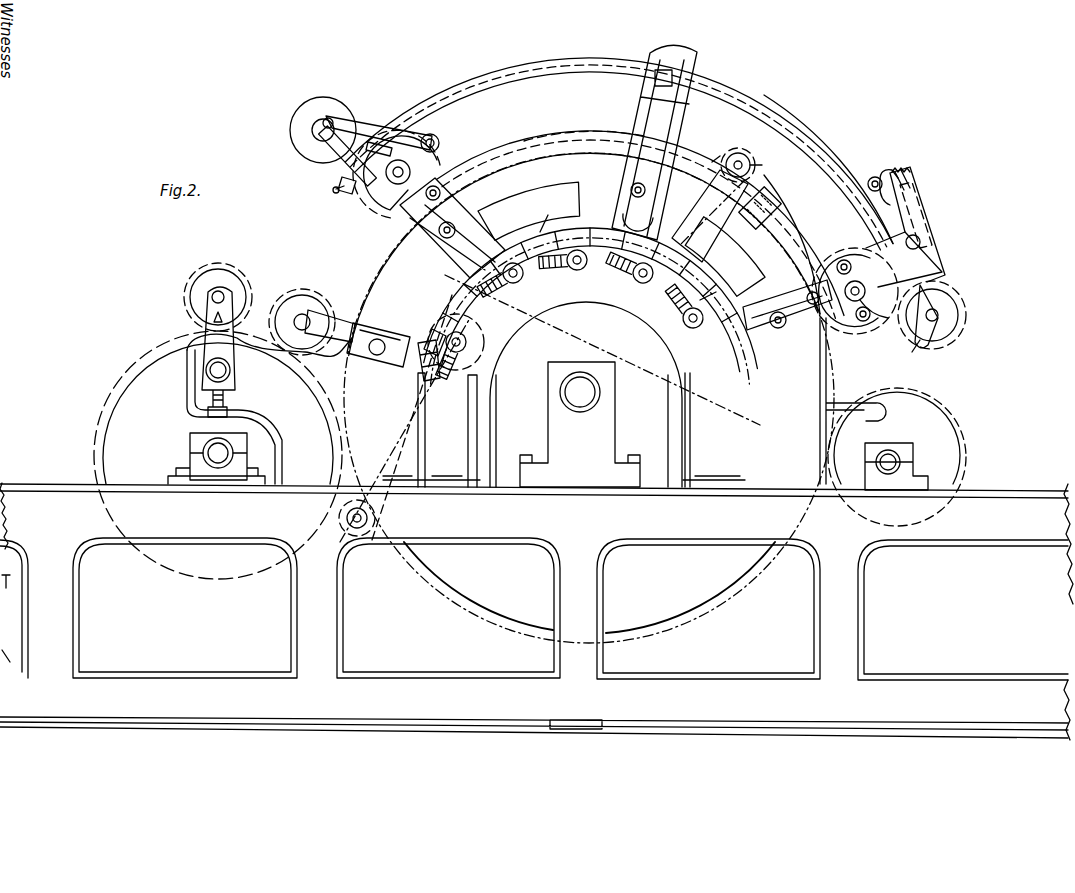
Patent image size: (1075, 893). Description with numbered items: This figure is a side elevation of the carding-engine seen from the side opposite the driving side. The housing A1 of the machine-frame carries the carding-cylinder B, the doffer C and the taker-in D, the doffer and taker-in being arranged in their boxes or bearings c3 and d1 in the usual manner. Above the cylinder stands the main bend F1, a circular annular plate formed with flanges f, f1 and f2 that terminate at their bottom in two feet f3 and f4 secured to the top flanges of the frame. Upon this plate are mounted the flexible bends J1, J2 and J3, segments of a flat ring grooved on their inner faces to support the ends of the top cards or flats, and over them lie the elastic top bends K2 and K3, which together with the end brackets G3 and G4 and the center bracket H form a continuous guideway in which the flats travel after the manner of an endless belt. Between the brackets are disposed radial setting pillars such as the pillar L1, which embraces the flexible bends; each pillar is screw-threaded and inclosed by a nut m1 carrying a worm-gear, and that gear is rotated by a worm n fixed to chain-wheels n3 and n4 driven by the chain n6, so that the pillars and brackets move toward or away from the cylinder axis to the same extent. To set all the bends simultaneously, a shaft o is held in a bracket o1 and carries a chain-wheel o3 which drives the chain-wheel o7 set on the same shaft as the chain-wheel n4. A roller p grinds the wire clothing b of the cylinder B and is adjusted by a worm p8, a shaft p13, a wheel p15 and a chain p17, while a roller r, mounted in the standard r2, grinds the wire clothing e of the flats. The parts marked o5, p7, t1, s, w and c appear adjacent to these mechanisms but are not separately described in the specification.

The housing of the machine-frame A1 is at (536, 611).
The carding-cylinder B is at (615, 398).
The doffer C is at (218, 455).
The doffer box or bearing c3 is at (216, 460).
The taker-in D is at (897, 457).
The taker-in box or bearing d1 is at (896, 466).
The top bend K2 is at (620, 154).
The top bend K3 is at (828, 169).
The flexible bend J1 is at (586, 142).
The flexible bend J2 is at (640, 224).
The flexible bend J3 is at (796, 232).
The wire clothing of the carding-cylinder b is at (584, 254).
The radial setting pillar L1 is at (629, 239).
The flange of the main bend f is at (748, 292).
The flange of the main bend f1 is at (740, 450).
The flange of the main bend f2 is at (690, 456).
The foot of the main bend f3 is at (714, 478).
The foot of the main bend f4 is at (440, 486).
The center bracket H is at (654, 142).
The setting shaft o is at (761, 163).
The bracket for the setting shaft o1 is at (710, 216).
The pulley or chain-wheel o3 is at (739, 153).
The pivot o5 is at (711, 156).
The chain-wheel o7 is at (527, 310).
The worm n is at (593, 319).
The chain-wheel n3 is at (432, 330).
The chain-wheel n4 is at (708, 372).
The chain or belt n6 is at (602, 350).
The nut with worm-gear m1 is at (432, 368).
The grinding-roller for the cylinder p is at (269, 309).
The lever p7 is at (373, 345).
The worm p8 is at (456, 346).
The shaft p13 is at (349, 521).
The wheel p15 is at (412, 417).
The chain p17 is at (405, 430).
The main bend F1 is at (451, 241).
The end bracket G3 is at (388, 200).
The end bracket G4 is at (842, 283).
The link t1 is at (379, 136).
The link s is at (348, 156).
The stop w is at (344, 195).
The wire clothing of the flats e is at (891, 222).
The plate edge c is at (874, 325).
The grinding-roller for the flats r is at (932, 315).
The standard for roller r r2 is at (926, 353).